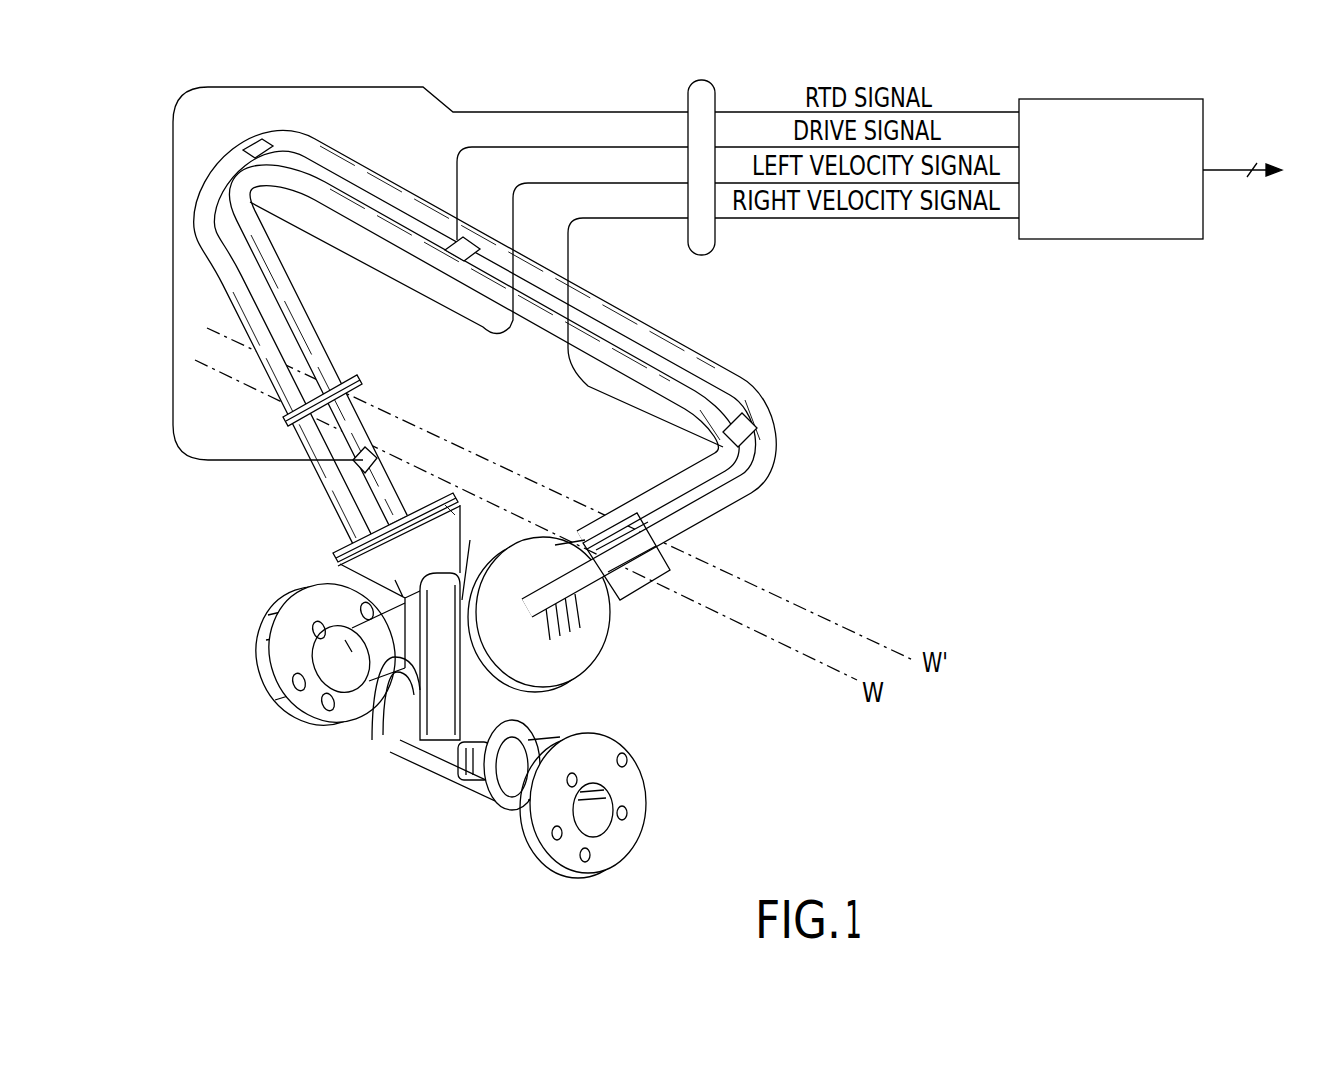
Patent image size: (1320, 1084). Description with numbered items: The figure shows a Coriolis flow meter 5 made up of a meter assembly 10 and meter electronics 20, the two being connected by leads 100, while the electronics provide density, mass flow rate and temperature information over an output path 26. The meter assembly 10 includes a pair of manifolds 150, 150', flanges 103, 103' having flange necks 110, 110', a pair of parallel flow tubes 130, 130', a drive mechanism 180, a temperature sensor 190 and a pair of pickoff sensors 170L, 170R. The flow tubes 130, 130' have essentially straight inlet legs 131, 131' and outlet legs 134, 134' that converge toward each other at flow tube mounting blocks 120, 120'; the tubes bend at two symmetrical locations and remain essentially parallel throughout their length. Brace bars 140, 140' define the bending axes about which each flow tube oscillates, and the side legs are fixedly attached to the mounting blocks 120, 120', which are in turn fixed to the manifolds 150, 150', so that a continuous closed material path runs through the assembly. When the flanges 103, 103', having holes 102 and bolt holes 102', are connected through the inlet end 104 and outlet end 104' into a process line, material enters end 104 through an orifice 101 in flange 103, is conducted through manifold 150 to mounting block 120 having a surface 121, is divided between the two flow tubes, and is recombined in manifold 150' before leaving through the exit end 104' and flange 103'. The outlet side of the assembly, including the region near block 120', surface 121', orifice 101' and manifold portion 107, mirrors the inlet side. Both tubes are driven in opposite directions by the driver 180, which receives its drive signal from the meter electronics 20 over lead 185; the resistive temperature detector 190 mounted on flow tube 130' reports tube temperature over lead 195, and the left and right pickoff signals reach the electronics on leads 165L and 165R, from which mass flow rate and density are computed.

The flow meter 5 is at (1100, 310).
The meter assembly 10 is at (692, 652).
The meter electronics 20 is at (1150, 240).
The path 26 is at (1223, 172).
The leads 100 is at (688, 92).
The orifice 101 is at (285, 653).
The outlet flange 101' is at (602, 803).
The holes 102 is at (297, 687).
The bolt holes 102' is at (633, 796).
The flange 103 is at (319, 639).
The flange 103' is at (585, 828).
The inlet end 104 is at (190, 679).
The outlet end 104' is at (592, 922).
The manifold 107 is at (453, 520).
The flange neck 110 is at (336, 685).
The flange neck 110' is at (511, 802).
The flow tube mounting block 120 is at (371, 526).
The flow tube mounting block 120' is at (569, 614).
The surface 121 is at (412, 541).
The outlet manifold 121' is at (551, 536).
The flow tube 130 is at (485, 374).
The flow tube 130' is at (484, 357).
The inlet leg 131 is at (237, 408).
The inlet leg 131' is at (322, 375).
The outlet leg 134 is at (688, 446).
The outlet leg 134' is at (796, 445).
The brace bar 140 is at (291, 406).
The brace bar 140' is at (626, 581).
The manifold 150 is at (446, 690).
The manifold 150' is at (542, 750).
The lead 165L is at (1005, 190).
The lead 165R is at (930, 220).
The pickoff sensor 170L is at (250, 140).
The pickoff sensor 170R is at (757, 422).
The drive mechanism 180 is at (470, 243).
The lead 185 is at (762, 147).
The temperature sensor 190 is at (368, 452).
The lead 195 is at (750, 112).